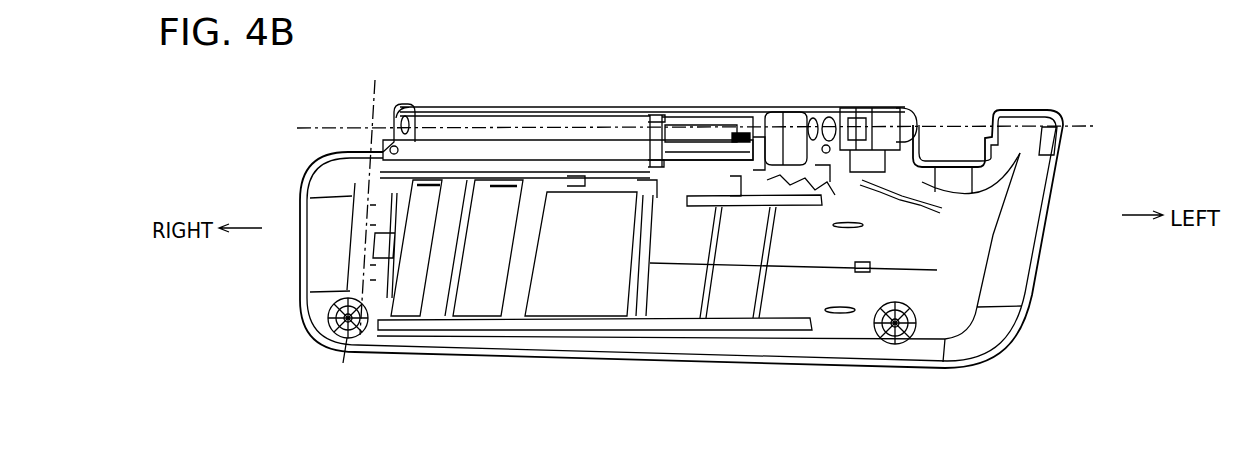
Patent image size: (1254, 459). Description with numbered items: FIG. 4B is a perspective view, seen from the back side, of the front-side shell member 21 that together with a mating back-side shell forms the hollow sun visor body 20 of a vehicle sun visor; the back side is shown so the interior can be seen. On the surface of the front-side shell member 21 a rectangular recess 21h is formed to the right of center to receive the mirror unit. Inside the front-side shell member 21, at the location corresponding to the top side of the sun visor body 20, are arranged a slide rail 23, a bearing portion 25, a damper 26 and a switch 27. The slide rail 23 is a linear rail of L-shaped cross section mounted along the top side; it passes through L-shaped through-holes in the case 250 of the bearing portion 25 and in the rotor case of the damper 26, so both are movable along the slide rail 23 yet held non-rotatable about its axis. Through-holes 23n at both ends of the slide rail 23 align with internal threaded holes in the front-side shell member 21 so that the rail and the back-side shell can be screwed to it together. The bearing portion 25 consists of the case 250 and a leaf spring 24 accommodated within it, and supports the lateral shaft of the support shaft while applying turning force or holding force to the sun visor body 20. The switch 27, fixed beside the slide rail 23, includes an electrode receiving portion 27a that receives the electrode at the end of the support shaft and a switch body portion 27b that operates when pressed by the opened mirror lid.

The sun visor body 20 is at (1026, 74).
The front-side shell member 21 is at (748, 92).
The rectangular recess 21h is at (564, 306).
The slide rail 23 is at (479, 136).
The through-holes 23n is at (388, 142).
The leaf spring 24 is at (697, 133).
The bearing portion 25 is at (665, 116).
The damper 26 is at (787, 138).
The switch 27 is at (910, 107).
The electrode receiving portion 27a is at (868, 118).
The switch body portion 27b is at (895, 215).
The case 250 is at (630, 140).